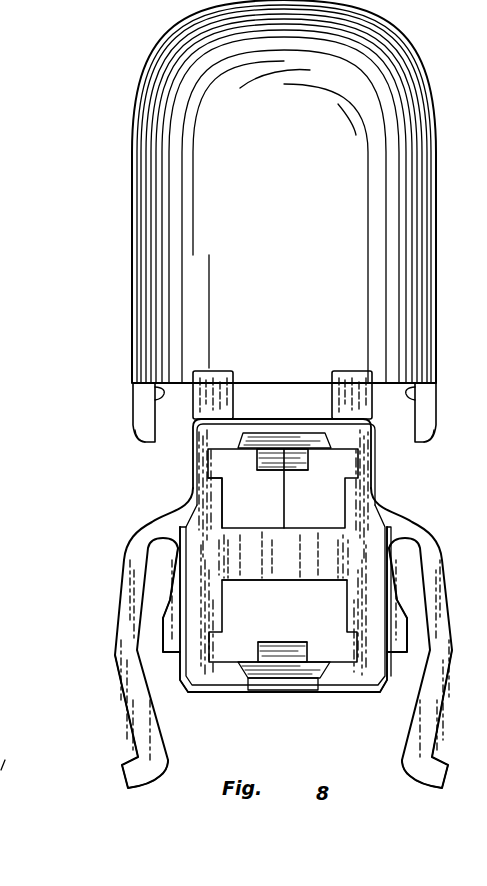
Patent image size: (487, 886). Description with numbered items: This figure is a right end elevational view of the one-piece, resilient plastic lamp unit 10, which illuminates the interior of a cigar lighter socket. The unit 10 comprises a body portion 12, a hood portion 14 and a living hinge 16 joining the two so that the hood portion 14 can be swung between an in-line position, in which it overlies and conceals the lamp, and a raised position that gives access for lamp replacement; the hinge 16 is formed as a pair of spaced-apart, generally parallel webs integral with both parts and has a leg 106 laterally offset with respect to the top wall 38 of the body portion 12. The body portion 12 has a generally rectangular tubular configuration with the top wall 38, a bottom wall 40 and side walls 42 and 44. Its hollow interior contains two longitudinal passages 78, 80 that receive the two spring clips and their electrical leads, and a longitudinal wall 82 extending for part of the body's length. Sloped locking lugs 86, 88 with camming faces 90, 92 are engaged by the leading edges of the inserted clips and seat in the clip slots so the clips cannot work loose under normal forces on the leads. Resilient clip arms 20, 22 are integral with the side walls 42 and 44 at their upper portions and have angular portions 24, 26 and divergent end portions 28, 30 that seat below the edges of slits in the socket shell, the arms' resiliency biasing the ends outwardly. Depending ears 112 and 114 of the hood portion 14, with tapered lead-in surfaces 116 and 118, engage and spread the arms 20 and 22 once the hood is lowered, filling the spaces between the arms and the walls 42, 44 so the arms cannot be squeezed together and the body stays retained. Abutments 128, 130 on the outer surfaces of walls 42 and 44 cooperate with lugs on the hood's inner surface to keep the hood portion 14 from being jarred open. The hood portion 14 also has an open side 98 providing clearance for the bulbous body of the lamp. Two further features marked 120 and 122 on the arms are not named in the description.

The lamp unit 10 is at (78, 408).
The body portion 12 is at (418, 506).
The hood portion 14 is at (170, 98).
The living hinge 16 is at (188, 408).
The resilient clip arm 20 is at (432, 556).
The resilient clip arm 22 is at (126, 559).
The angular portion 24 is at (438, 690).
The angular portion 26 is at (125, 684).
The divergent end portion 28 is at (428, 775).
The divergent end portion 30 is at (154, 772).
The top wall 38 is at (302, 409).
The bottom wall 40 is at (237, 697).
The side wall 42 is at (348, 516).
The side wall 44 is at (222, 500).
The longitudinal passage 78 is at (222, 465).
The longitudinal passage 80 is at (330, 650).
The longitudinal wall 82 is at (314, 567).
The sloped locking lug 86 is at (298, 473).
The sloped locking lug 88 is at (276, 638).
The camming face 90 is at (308, 462).
The camming face 92 is at (288, 648).
The open side 98 is at (315, 380).
The hinge leg 106 is at (220, 370).
The depending ear 112 is at (424, 402).
The depending ear 114 is at (140, 402).
The tapered lead-in surface 116 is at (436, 430).
The tapered lead-in surface 118 is at (142, 428).
The right shoulder 120 is at (407, 619).
The left shoulder 122 is at (163, 620).
The abutment 128 is at (396, 653).
The abutment 130 is at (164, 652).